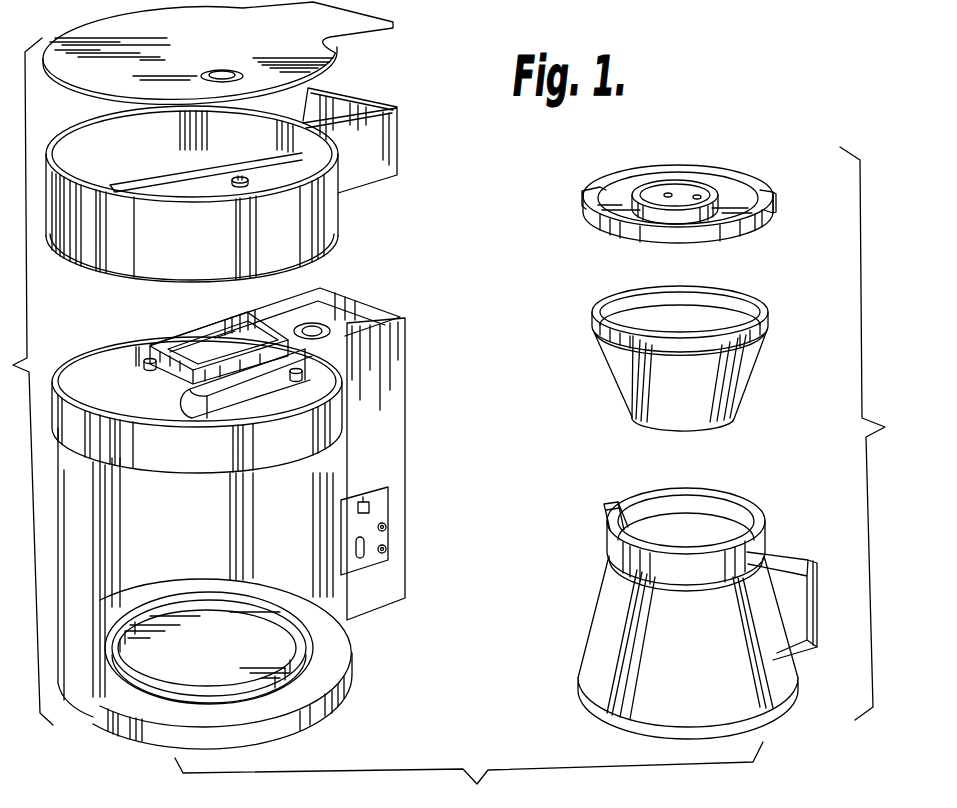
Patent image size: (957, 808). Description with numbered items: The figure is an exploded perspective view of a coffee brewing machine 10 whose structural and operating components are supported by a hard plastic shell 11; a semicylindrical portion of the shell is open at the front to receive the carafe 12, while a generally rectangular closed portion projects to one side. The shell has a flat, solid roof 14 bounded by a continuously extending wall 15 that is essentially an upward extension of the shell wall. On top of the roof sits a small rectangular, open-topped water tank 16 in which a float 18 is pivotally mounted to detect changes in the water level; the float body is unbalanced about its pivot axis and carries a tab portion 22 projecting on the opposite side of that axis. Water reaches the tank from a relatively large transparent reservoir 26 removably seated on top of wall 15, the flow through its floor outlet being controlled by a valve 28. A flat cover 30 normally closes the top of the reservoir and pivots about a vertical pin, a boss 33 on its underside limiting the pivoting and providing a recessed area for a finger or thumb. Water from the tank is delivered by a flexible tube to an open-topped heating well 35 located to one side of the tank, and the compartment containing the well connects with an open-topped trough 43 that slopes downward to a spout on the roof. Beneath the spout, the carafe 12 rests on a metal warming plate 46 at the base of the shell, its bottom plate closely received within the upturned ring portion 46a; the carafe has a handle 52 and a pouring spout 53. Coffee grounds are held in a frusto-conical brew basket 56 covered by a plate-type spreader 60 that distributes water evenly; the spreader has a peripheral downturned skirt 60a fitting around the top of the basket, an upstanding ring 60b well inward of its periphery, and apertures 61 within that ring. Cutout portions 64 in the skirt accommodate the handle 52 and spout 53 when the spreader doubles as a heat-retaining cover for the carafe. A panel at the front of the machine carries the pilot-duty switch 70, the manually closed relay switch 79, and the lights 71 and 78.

The coffee brewing machine 10 is at (437, 442).
The shell 11 is at (93, 715).
The carafe 12 is at (583, 707).
The roof 14 is at (197, 381).
The wall 15 is at (93, 355).
The water tank 16 is at (170, 380).
The float 18 is at (178, 352).
The tab portion 22 is at (247, 335).
The reservoir 26 is at (402, 157).
The valve 28 is at (245, 178).
The cover 30 is at (97, 33).
The boss 33 is at (230, 72).
The heating well 35 is at (325, 327).
The trough 43 is at (231, 402).
The warming plate 46 is at (222, 664).
The upturned ring portion 46a is at (263, 688).
The handle 52 is at (814, 605).
The pouring spout 53 is at (608, 504).
The brew basket 56 is at (745, 369).
The spreader 60 is at (676, 206).
The skirt 60a is at (614, 236).
The upstanding ring 60b is at (682, 217).
The apertures 61 is at (698, 197).
The cutout portions 64 is at (592, 184).
The switch 70 is at (357, 562).
The light 71 is at (388, 549).
The light 78 is at (388, 527).
The relay switch 79 is at (363, 500).